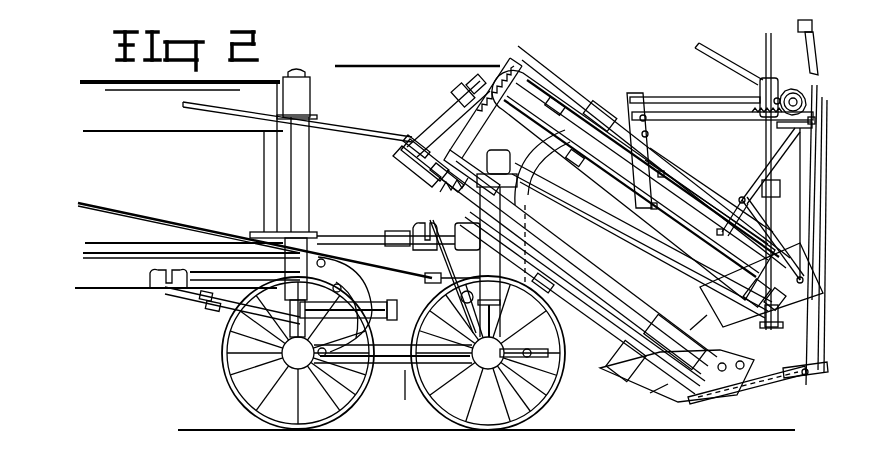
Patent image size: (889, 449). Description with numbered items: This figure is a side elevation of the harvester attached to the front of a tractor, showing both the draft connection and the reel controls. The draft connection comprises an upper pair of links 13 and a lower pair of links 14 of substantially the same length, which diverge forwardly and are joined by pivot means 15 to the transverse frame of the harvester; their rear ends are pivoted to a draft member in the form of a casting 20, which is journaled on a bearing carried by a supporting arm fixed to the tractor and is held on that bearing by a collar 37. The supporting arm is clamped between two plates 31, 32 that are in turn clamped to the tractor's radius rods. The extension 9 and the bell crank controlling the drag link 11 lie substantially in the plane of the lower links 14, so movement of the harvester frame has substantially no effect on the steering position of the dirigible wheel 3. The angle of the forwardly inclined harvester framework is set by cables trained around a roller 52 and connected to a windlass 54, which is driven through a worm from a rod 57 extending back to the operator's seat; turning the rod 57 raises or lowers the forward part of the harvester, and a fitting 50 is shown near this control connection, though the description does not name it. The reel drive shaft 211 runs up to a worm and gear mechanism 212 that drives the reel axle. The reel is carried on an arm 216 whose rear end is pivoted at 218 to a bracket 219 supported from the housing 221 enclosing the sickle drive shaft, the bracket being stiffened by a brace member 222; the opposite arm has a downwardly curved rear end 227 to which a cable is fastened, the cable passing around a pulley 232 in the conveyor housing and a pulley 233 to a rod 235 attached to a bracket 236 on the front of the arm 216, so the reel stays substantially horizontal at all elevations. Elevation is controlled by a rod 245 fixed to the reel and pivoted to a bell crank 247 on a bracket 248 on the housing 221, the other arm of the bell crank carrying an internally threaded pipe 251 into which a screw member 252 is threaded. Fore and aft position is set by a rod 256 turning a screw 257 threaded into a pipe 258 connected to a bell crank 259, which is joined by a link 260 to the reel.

The dirigible wheel 3 is at (562, 366).
The extension 9 is at (405, 400).
The drag link 11 is at (527, 349).
The pair of links 13 is at (398, 266).
The second pair of links 14 is at (386, 352).
The pivot means 15 is at (432, 284).
The casting 20 is at (365, 333).
The plate 31 is at (210, 308).
The plate 32 is at (195, 300).
The collar 37 is at (397, 312).
The fork 50 is at (424, 222).
The roller 52 is at (478, 330).
The windlass 54 is at (462, 302).
The rod 57 is at (140, 217).
The reel drive shaft 211 is at (808, 220).
The worm and gear mechanism 212 is at (760, 90).
The arm 216 is at (740, 121).
The pivot 218 is at (644, 115).
The bracket 219 is at (646, 146).
The housing 221 is at (660, 236).
The brace member 222 is at (601, 112).
The downwardly curved rear end 227 is at (534, 163).
The pulley 232 is at (728, 394).
The pulley 233 is at (805, 378).
The rod 235 is at (800, 250).
The bracket 236 is at (810, 124).
The rod 245 is at (782, 181).
The bell crank 247 is at (742, 214).
The bracket 248 is at (682, 258).
The pipe 251 is at (681, 172).
The screw member 252 is at (575, 104).
The rod 256 is at (378, 66).
The screw 257 is at (540, 70).
The pipe 258 is at (580, 100).
The bell crank 259 is at (664, 180).
The link 260 is at (700, 78).